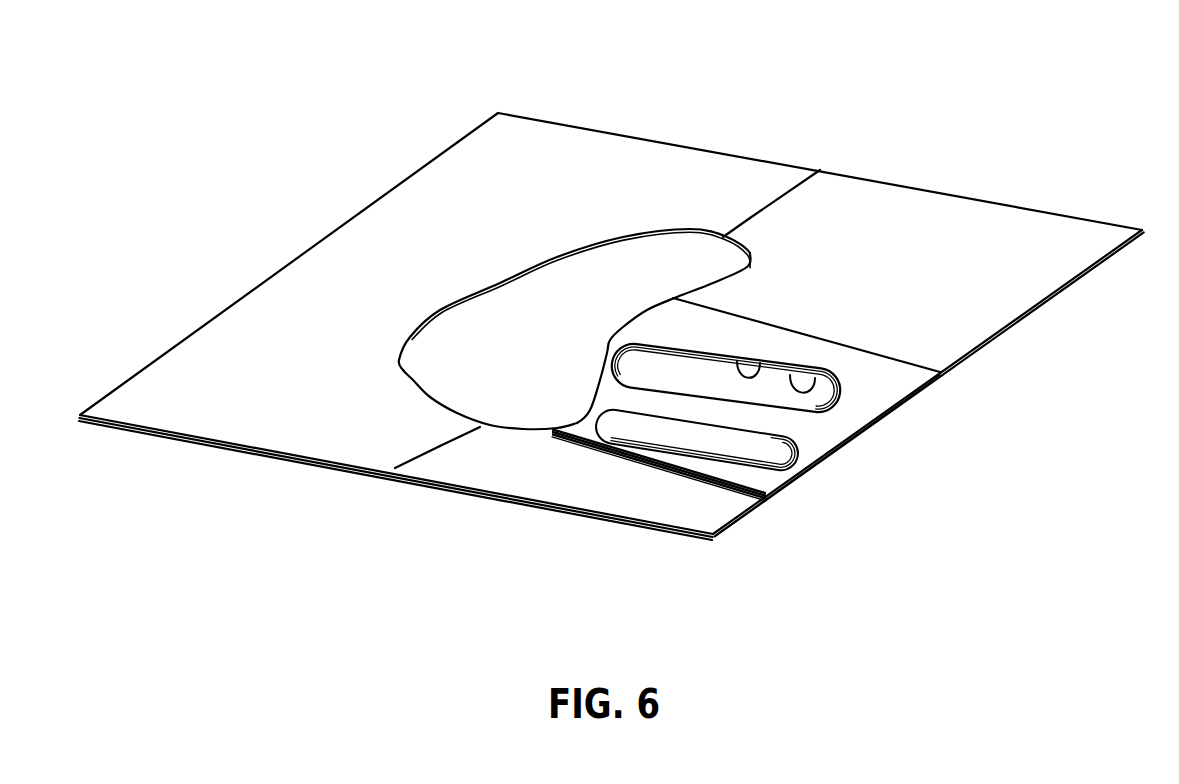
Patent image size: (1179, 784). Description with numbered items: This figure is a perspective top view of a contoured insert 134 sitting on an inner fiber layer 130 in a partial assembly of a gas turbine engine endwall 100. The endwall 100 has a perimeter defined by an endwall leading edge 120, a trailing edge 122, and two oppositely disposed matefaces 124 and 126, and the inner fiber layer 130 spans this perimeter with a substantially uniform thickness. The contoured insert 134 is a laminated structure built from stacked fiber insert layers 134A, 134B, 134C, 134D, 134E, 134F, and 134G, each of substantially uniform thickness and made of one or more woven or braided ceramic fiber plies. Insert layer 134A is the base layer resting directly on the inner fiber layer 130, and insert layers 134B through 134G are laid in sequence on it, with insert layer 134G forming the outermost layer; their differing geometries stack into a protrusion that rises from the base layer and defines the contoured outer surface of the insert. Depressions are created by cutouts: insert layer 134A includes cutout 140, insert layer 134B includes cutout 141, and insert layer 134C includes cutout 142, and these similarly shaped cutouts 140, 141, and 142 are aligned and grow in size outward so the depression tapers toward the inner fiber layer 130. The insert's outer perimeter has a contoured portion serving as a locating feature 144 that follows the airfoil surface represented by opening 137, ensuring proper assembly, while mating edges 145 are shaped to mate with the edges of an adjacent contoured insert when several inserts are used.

The endwall 100 is at (1034, 121).
The endwall leading edge 120 is at (326, 466).
The endwall trailing edge 122 is at (701, 148).
The mateface 124 is at (998, 331).
The mateface 126 is at (322, 240).
The inner fiber layer 130 is at (284, 409).
The contoured insert 134 is at (1136, 220).
The insert layer 134A is at (940, 280).
The insert layer 134B is at (733, 489).
The insert layer 134C is at (892, 387).
The insert layer 134D is at (688, 468).
The insert layer 134E is at (645, 462).
The insert layer 134F is at (626, 451).
The insert layer 134G is at (722, 442).
The opening 137 is at (500, 284).
The cutout 140 is at (809, 386).
The cutout 141 is at (750, 372).
The cutout 142 is at (636, 356).
The locating feature 144 is at (642, 314).
The mating edge 145 is at (448, 442).